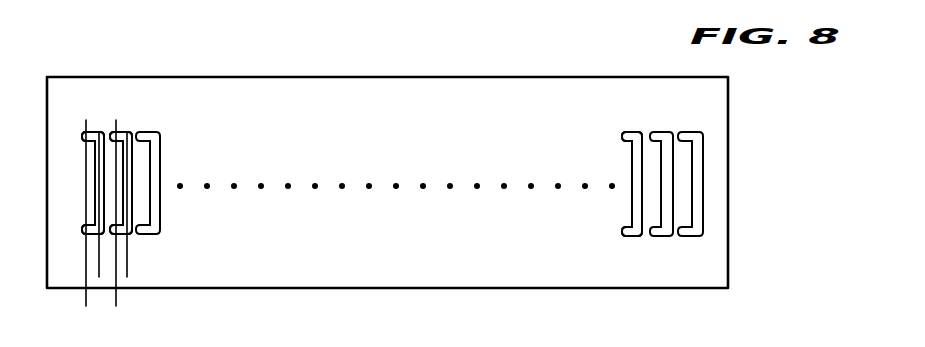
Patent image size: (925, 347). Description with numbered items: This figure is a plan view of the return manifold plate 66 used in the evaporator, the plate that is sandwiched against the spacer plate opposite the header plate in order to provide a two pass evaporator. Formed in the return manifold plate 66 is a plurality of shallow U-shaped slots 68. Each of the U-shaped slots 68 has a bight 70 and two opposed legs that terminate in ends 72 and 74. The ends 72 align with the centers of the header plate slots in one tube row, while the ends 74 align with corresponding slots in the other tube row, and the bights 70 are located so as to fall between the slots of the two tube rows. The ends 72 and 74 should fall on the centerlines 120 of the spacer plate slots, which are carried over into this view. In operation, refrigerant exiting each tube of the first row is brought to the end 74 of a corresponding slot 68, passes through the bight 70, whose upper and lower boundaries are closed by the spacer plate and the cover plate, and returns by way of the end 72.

The return manifold plate 66 is at (58, 84).
The U-shaped slots 68 is at (161, 209).
The bight 70 is at (130, 166).
The end 72 is at (115, 131).
The end 74 is at (110, 230).
The centerlines 120 is at (86, 305).